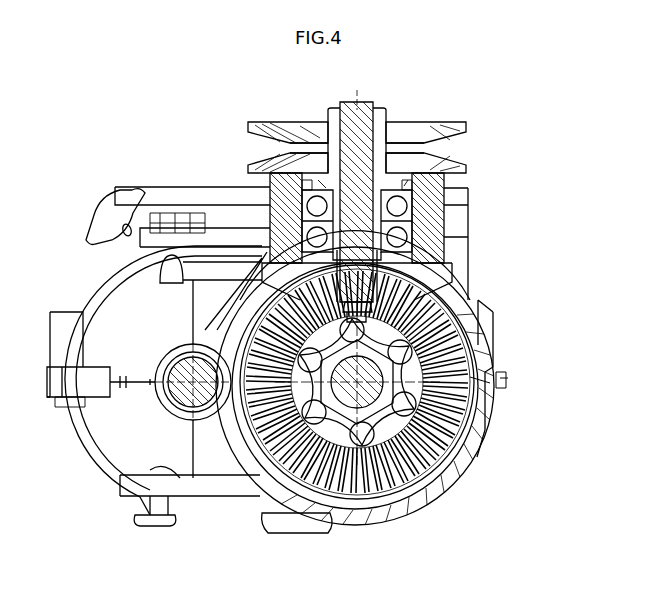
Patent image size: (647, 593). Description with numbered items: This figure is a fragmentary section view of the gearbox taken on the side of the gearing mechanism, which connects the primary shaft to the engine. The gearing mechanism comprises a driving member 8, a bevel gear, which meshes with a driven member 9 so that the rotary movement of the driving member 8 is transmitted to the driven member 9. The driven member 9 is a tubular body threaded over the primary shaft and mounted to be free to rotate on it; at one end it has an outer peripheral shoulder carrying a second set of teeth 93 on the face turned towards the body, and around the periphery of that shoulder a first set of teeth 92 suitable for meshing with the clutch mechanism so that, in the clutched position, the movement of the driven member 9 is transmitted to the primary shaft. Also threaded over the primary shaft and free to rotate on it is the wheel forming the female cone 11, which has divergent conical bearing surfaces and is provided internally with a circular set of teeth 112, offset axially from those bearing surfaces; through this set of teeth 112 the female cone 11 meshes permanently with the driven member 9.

The driving member 8 is at (420, 273).
The driven member 9 is at (455, 303).
The first set of teeth 92 is at (470, 347).
The second set of teeth 93 is at (468, 403).
The circular set of teeth 112 is at (468, 433).
The female cone 11 is at (465, 475).